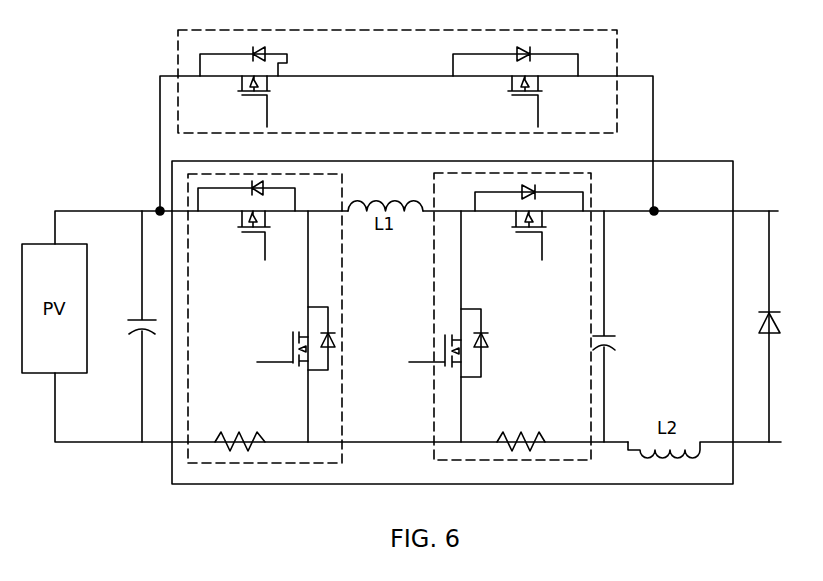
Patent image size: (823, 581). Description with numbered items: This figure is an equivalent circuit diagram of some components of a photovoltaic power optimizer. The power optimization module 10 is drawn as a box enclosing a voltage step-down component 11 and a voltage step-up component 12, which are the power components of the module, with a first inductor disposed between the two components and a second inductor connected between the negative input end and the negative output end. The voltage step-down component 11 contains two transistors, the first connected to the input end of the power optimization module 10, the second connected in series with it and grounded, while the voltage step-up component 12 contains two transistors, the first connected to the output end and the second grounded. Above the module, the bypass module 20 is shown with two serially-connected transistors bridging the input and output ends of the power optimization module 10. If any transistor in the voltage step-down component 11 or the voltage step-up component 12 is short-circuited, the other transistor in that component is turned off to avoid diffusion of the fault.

The power optimization module 10 is at (733, 186).
The voltage step-down component 11 is at (342, 312).
The voltage step-up component 12 is at (433, 420).
The bypass module 20 is at (617, 63).